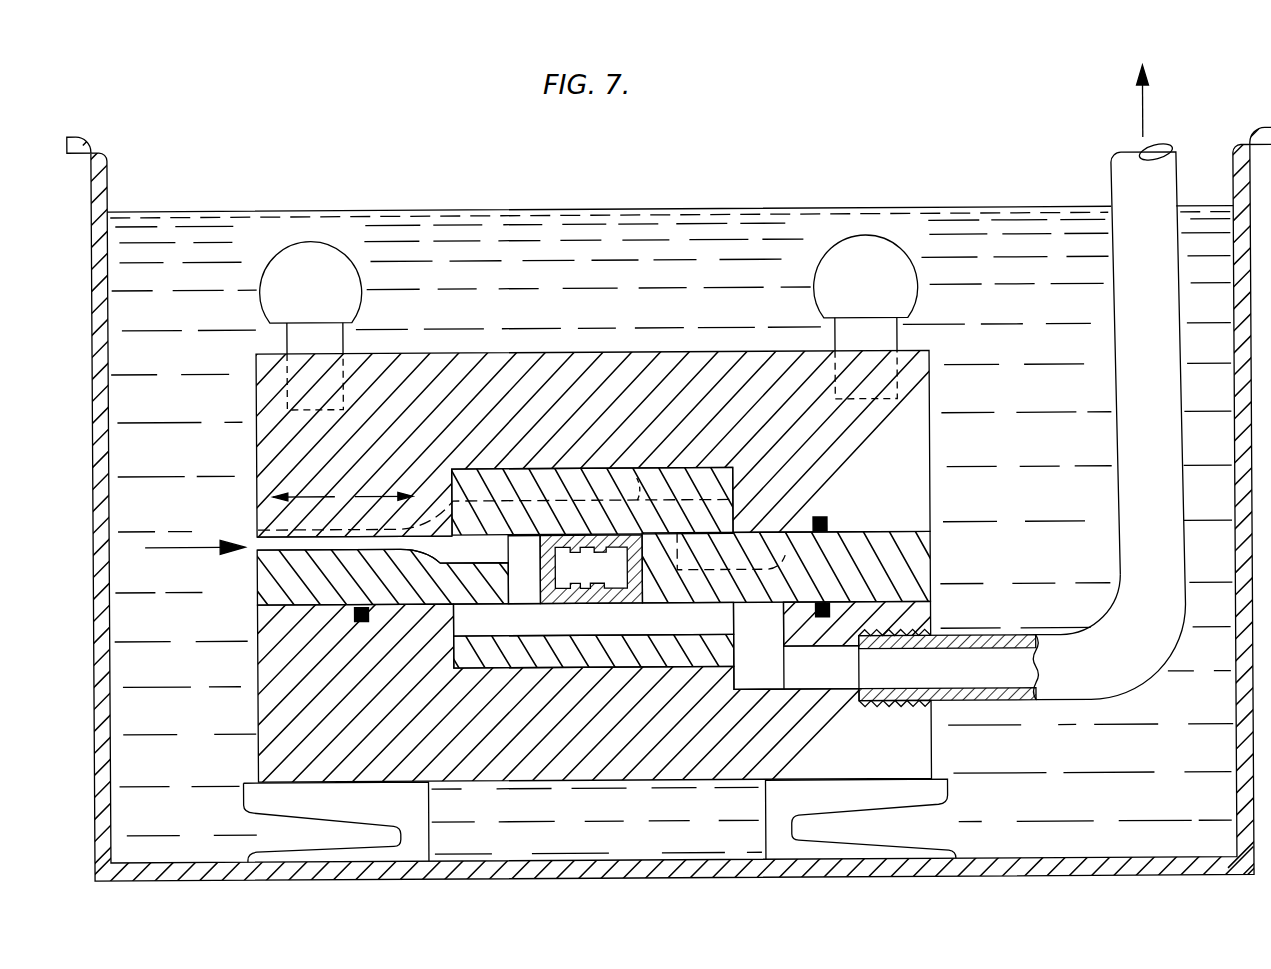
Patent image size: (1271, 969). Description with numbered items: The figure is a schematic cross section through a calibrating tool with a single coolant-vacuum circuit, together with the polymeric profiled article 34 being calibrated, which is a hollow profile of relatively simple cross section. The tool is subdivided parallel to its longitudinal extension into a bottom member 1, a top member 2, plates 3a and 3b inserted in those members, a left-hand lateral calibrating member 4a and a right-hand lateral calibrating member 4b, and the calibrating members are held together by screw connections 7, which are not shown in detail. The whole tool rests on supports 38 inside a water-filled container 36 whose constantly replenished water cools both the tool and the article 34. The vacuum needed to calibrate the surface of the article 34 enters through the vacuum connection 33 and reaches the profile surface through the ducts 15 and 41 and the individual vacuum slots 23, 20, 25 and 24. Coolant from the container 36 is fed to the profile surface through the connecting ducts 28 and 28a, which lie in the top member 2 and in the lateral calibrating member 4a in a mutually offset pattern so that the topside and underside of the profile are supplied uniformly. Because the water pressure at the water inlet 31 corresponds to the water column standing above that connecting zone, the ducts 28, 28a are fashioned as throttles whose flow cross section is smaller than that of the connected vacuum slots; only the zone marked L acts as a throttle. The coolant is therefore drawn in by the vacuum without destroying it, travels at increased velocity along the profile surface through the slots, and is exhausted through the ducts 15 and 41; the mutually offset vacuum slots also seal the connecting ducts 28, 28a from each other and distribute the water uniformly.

The bottom member 1 is at (518, 780).
The top member 2 is at (500, 368).
The plate 3a is at (707, 642).
The plate 3b is at (587, 477).
The left-hand lateral calibrating member 4a is at (273, 586).
The right-hand lateral calibrating member 4b is at (915, 558).
The screw connection 7 is at (340, 266).
The duct 15 is at (800, 681).
The vacuum slot 20 is at (641, 491).
The vacuum slot 23 is at (781, 568).
The vacuum slot 24 is at (470, 617).
The vacuum slot 25 is at (507, 582).
The connecting duct 28 is at (322, 528).
The connecting duct 28a is at (262, 545).
The water inlet 31 is at (188, 546).
The vacuum connection 33 is at (1128, 273).
The polymeric profiled article 34 is at (637, 534).
The water-filled container 36 is at (1242, 319).
The support 38 is at (350, 808).
The duct 41 is at (773, 657).